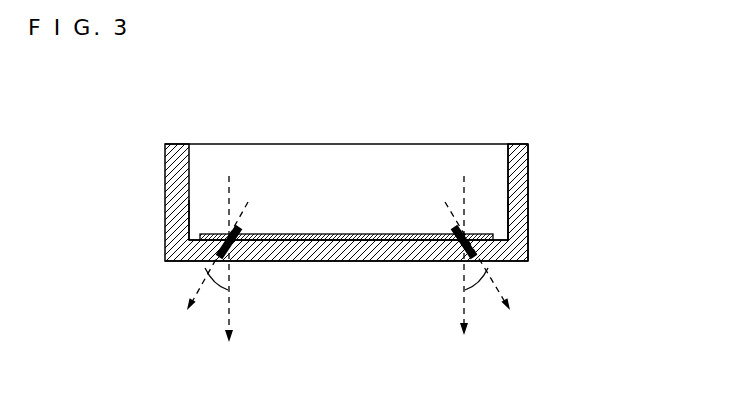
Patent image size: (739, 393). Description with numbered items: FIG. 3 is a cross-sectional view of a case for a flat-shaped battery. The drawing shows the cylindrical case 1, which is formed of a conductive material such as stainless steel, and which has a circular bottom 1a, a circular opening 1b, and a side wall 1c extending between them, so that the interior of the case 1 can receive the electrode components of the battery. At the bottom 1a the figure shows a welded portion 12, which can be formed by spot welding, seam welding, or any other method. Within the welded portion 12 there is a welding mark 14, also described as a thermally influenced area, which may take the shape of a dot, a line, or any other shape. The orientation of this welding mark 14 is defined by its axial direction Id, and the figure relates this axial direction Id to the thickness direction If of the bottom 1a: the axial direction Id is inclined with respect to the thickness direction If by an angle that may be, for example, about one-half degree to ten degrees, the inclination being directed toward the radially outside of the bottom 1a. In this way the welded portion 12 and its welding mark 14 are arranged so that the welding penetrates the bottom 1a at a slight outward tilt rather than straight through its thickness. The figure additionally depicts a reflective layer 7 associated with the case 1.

The cylindrical case 1 is at (474, 127).
The circular bottom 1a is at (345, 262).
The circular opening 1b is at (407, 144).
The side wall 1c is at (528, 208).
The reflective layer 7 is at (326, 234).
The welded portion 12 is at (242, 268).
The welding mark 14 is at (213, 235).
The thickness direction If is at (233, 300).
The axial direction Id is at (197, 290).